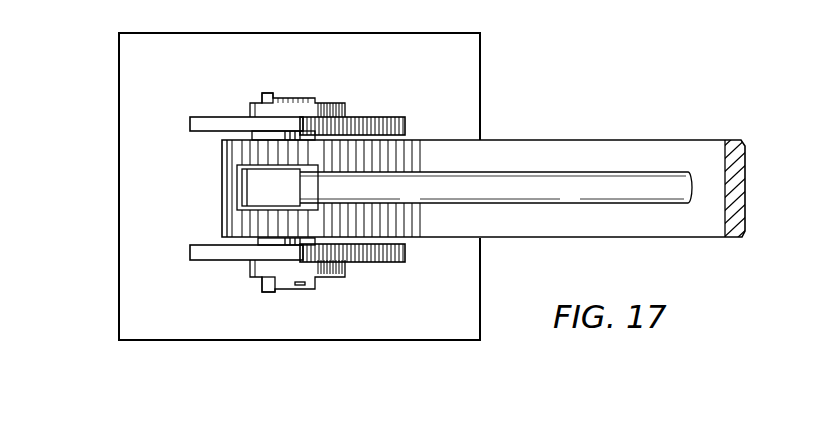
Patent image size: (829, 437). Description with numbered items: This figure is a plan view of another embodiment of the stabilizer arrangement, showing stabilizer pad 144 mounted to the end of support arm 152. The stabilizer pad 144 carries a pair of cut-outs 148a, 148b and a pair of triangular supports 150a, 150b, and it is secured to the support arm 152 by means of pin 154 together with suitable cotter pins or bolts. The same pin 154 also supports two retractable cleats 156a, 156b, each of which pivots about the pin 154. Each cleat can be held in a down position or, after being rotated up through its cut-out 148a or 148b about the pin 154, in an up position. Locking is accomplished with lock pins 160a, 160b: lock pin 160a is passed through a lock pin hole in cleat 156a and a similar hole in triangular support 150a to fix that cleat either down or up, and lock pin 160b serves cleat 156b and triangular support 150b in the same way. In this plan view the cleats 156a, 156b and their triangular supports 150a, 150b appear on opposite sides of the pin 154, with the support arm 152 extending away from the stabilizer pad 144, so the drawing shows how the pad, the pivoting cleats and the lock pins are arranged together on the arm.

The stabilizer pad 144 is at (460, 58).
The support arm 152 is at (745, 190).
The pin 154 is at (330, 243).
The triangular support 150a is at (190, 250).
The triangular support 150b is at (190, 123).
The cut-out 148a is at (357, 274).
The cut-out 148b is at (348, 110).
The retractable cleat 156a is at (330, 277).
The retractable cleat 156b is at (327, 103).
The lock pin 160a is at (266, 292).
The lock pin 160b is at (265, 93).